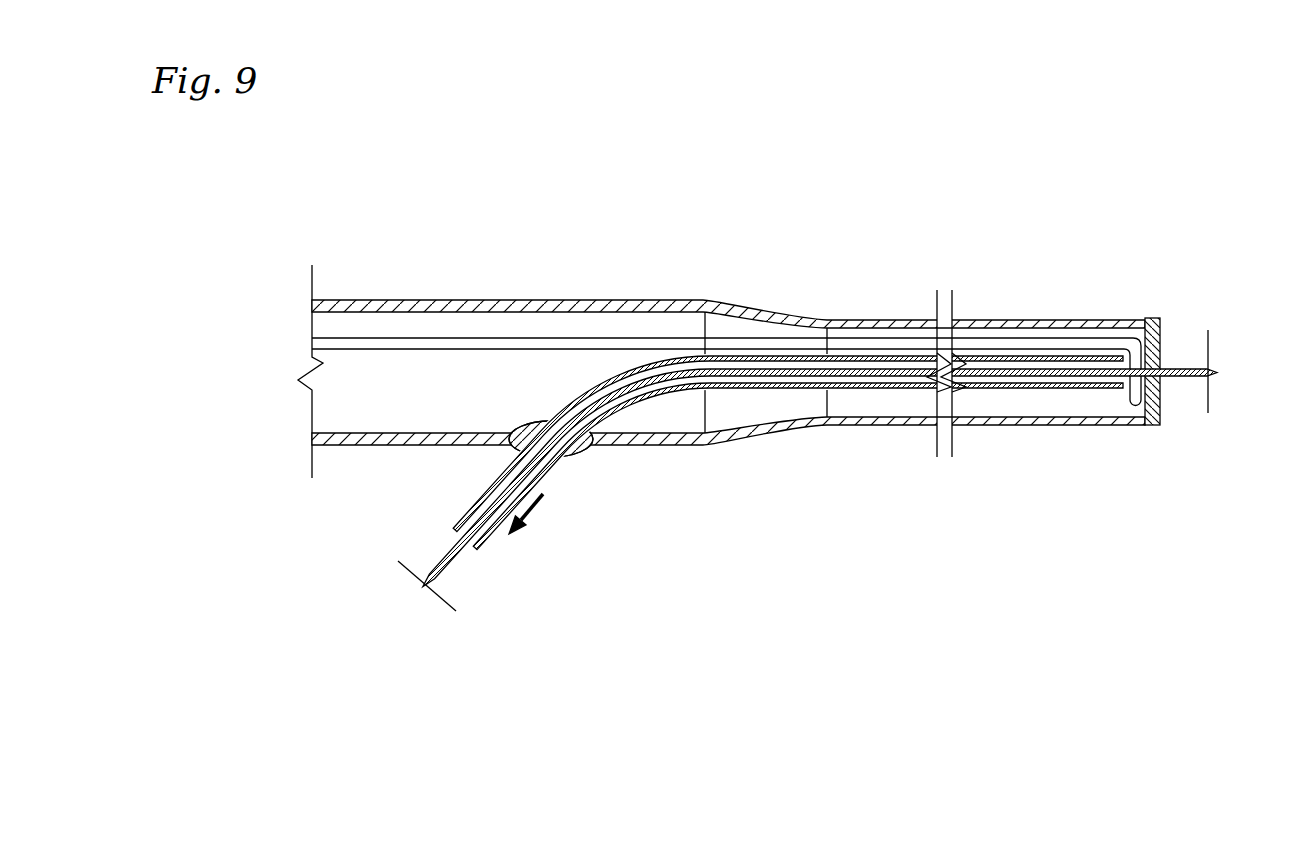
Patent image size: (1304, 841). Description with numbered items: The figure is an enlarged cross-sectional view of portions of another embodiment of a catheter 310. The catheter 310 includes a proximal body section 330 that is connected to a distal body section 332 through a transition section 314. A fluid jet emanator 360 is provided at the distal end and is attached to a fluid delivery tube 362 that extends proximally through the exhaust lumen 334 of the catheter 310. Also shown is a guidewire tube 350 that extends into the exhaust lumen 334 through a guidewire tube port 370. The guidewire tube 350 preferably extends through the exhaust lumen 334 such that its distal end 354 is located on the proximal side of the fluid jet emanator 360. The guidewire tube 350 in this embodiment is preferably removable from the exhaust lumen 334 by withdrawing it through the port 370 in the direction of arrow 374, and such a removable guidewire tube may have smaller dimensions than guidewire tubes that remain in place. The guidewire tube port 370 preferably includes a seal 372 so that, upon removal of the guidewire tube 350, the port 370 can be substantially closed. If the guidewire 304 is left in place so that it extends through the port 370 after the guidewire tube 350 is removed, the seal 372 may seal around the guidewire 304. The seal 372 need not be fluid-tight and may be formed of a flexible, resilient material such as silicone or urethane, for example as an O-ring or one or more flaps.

The catheter 310 is at (852, 205).
The proximal body section 330 is at (312, 290).
The transition section 314 is at (835, 290).
The distal body section 332 is at (845, 290).
The exhaust lumen 334 is at (438, 420).
The guidewire tube 350 is at (735, 390).
The distal end 354 is at (1127, 387).
The fluid jet emanator 360 is at (1145, 330).
The fluid delivery tube 362 is at (1005, 337).
The guidewire tube port 370 is at (582, 447).
The seal 372 is at (570, 456).
The arrow 374 is at (533, 508).
The guidewire 304 is at (443, 565).